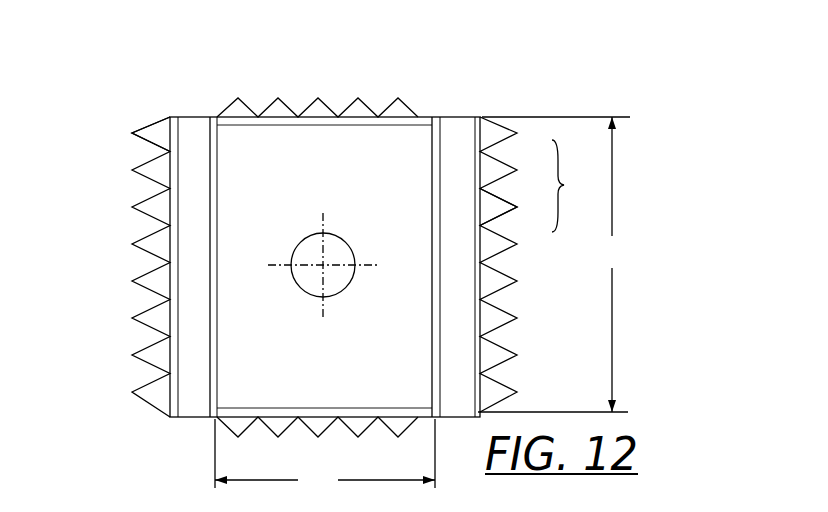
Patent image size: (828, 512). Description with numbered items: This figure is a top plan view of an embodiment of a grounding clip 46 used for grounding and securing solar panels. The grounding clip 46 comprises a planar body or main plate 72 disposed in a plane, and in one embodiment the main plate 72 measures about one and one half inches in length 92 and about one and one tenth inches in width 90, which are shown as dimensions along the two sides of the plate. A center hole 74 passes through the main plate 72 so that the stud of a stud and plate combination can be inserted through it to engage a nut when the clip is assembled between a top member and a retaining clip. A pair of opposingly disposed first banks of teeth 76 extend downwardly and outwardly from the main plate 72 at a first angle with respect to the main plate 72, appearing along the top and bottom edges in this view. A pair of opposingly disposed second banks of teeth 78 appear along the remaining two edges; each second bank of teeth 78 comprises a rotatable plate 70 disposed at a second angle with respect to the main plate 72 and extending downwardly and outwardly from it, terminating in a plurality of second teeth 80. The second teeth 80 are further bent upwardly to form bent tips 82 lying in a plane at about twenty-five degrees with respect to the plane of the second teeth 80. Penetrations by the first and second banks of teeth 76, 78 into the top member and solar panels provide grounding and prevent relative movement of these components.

The grounding clip 46 is at (340, 255).
The rotatable plate 70 is at (199, 117).
The main plate 72 is at (343, 183).
The center hole 74 is at (292, 263).
The first banks of teeth 76 is at (218, 117).
The second bank of teeth 78 is at (572, 186).
The second teeth 80 is at (167, 123).
The bent tips 82 is at (131, 133).
The width 90 is at (333, 490).
The length 92 is at (628, 265).